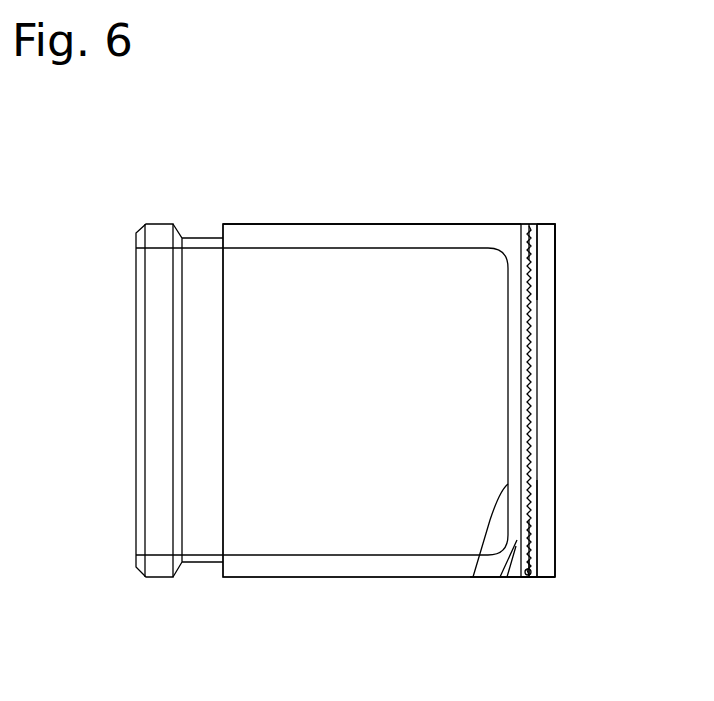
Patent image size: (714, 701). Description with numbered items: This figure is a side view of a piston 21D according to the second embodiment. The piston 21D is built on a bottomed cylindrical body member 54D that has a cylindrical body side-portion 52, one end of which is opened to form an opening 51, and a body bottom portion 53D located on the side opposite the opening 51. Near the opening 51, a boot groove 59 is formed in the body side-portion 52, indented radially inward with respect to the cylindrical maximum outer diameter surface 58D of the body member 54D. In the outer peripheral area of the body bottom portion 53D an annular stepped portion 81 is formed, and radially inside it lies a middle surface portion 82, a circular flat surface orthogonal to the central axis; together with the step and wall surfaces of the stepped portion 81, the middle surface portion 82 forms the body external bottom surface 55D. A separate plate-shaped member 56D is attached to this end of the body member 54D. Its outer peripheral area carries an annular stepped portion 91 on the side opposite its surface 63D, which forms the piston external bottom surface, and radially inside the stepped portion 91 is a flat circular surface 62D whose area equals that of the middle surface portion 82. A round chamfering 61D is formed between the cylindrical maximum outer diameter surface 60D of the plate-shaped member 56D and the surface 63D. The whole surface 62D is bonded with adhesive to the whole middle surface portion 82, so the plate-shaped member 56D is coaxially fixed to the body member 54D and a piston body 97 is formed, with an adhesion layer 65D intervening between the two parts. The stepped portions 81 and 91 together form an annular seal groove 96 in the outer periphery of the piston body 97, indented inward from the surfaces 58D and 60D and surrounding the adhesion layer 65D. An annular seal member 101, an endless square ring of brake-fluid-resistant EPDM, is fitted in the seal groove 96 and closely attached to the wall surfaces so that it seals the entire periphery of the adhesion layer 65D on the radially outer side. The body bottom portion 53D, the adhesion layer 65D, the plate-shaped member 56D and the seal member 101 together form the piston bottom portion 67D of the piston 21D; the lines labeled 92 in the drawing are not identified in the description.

The piston 21D is at (543, 186).
The opening 51 is at (136, 250).
The boot groove 59 is at (203, 238).
The body side-portion 52 is at (341, 252).
The maximum outer diameter surface 58D is at (290, 224).
The body bottom portion 53D is at (521, 322).
The body external bottom surface 55D is at (537, 350).
The plate-shaped member 56D is at (545, 388).
The adhesion layer 65D is at (530, 422).
The surface forming piston external bottom surface 63D is at (555, 460).
The piston bottom portion 67D is at (548, 493).
The middle surface portion 82 is at (537, 530).
The round chamfering 61D is at (555, 577).
The maximum outer diameter surface 60D is at (540, 580).
The surface 62D is at (473, 577).
The wedge 92 is at (500, 577).
The stepped portion 81 is at (523, 580).
The stepped portion 91 is at (529, 580).
The body member 54D is at (406, 224).
The piston body 97 is at (453, 224).
The seal groove 96 is at (530, 233).
The seal member 101 is at (540, 268).